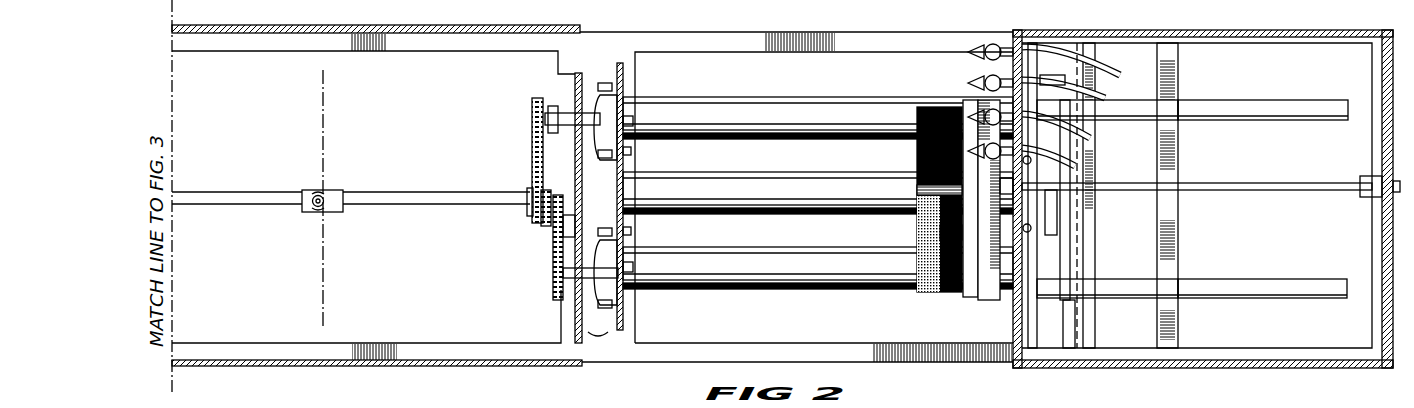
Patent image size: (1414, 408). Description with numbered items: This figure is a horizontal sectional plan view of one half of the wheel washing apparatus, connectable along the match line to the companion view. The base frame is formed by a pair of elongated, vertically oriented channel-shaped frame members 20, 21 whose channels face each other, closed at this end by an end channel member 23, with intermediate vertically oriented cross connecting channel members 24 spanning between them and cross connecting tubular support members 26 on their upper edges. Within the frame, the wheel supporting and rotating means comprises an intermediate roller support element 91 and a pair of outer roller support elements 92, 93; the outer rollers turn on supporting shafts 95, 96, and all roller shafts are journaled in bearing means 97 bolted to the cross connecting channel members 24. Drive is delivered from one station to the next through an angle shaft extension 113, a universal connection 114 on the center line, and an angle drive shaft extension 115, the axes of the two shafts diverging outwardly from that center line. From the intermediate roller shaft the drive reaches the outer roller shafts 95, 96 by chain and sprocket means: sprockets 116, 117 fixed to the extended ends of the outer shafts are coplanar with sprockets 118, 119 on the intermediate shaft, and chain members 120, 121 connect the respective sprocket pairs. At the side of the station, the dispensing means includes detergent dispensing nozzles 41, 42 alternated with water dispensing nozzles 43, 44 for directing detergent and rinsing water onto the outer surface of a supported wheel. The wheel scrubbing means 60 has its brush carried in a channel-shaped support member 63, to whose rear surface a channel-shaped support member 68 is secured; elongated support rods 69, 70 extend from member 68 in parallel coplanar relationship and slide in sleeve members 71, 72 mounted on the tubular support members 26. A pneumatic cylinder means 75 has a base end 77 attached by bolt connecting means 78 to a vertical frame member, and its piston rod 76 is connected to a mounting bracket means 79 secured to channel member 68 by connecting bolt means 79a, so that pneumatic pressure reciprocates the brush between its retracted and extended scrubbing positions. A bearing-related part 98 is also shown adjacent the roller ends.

The elongated channel-shaped frame member 20 is at (372, 346).
The elongated channel-shaped frame member 21 is at (482, 46).
The end channel member 23 is at (1370, 308).
The cross connecting channel member 24 is at (582, 316).
The tubular support member 26 is at (1172, 337).
The detergent dispensing nozzle 41 is at (983, 50).
The detergent dispensing nozzle 42 is at (978, 112).
The water dispensing nozzle 43 is at (975, 82).
The water dispensing nozzle 44 is at (917, 165).
The wheel scrubbing means 60 is at (932, 296).
The channel-shaped support member 63 is at (970, 300).
The channel-shaped support member 68 is at (988, 300).
The support rod 69 is at (1268, 108).
The support rod 70 is at (1282, 285).
The sleeve member 71 is at (1150, 110).
The sleeve member 72 is at (1112, 285).
The pneumatic cylinder means 75 is at (1245, 208).
The piston rod 76 is at (917, 192).
The base end 77 is at (1370, 216).
The bolt connecting means 78 is at (1360, 182).
The mounting bracket means 79 is at (1005, 195).
The connecting bolt means 79a is at (952, 235).
The intermediate roller support element 91 is at (792, 178).
The outer roller support element 92 is at (786, 105).
The outer roller support element 93 is at (797, 255).
The supporting shaft 95 is at (633, 121).
The supporting shaft 96 is at (634, 266).
The bearing means 97 is at (628, 92).
The bearing 98 is at (632, 152).
The angle shaft extension 113 is at (239, 193).
The universal connection 114 is at (326, 196).
The angle drive shaft extension 115 is at (416, 193).
The sprocket 116 is at (550, 103).
The sprocket 117 is at (570, 299).
The sprocket 118 is at (527, 191).
The sprocket 119 is at (552, 232).
The chain member 120 is at (532, 143).
The chain member 121 is at (556, 250).